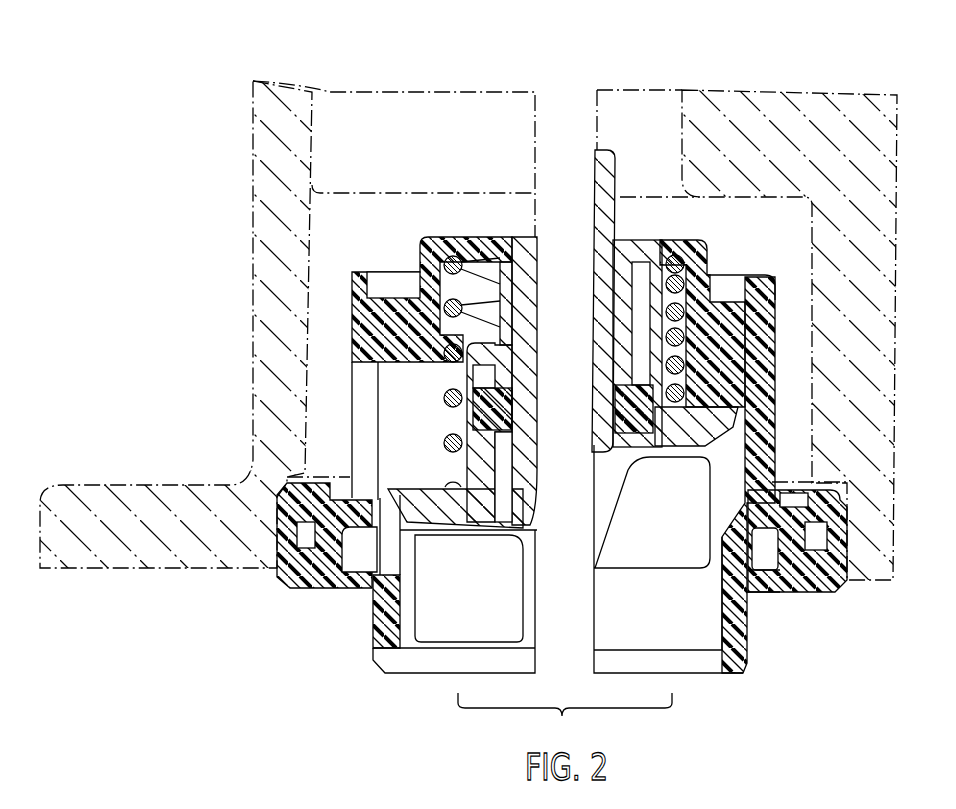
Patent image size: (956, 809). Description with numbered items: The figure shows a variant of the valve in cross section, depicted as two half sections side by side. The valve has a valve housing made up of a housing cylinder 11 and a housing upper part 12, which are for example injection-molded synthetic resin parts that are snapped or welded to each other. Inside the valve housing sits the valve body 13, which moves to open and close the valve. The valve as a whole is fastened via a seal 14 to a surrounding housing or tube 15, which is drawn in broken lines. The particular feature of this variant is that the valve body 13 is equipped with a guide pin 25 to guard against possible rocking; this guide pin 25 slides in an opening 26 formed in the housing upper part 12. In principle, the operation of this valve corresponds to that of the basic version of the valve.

The housing cylinder 11 is at (745, 457).
The housing upper part 12 is at (428, 252).
The valve body 13 is at (426, 497).
The seal 14 is at (315, 580).
The housing or tube 15 is at (170, 487).
The guide pin 25 is at (613, 168).
The opening 26 is at (514, 240).